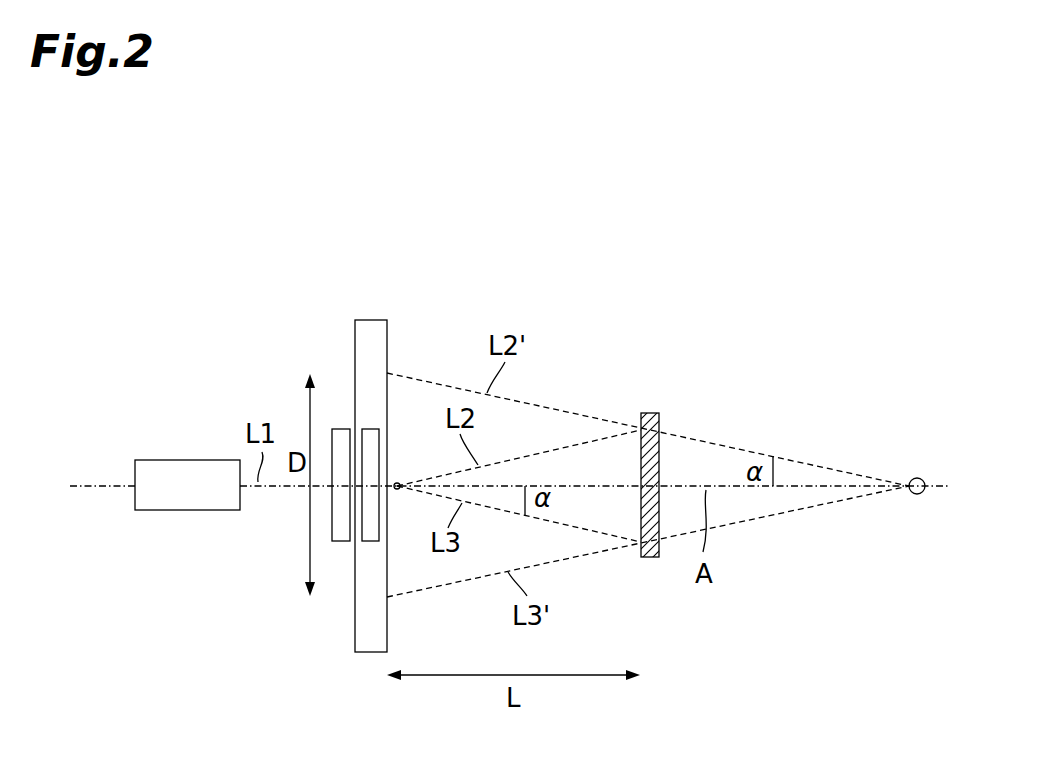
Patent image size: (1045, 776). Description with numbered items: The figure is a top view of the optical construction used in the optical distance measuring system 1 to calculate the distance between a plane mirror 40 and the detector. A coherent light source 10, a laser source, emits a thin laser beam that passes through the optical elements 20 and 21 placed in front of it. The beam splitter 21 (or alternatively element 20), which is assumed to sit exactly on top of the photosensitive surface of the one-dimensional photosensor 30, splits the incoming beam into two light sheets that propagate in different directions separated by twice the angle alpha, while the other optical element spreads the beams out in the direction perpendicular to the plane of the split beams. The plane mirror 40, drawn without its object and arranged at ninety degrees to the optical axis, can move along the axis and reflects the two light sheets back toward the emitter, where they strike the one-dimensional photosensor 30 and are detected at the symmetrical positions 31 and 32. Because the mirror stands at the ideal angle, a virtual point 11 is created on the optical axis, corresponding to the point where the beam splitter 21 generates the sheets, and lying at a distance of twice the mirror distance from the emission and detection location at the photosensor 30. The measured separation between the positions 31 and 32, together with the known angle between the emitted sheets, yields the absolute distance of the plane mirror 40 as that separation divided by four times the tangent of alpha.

The optical distance measuring system 1 is at (243, 677).
The coherent light source 10 is at (161, 459).
The virtual point 11 is at (917, 477).
The optical element 20 is at (341, 428).
The optical element (beam splitter) 21 is at (370, 542).
The one-dimensional photosensor 30 is at (371, 319).
The detection position 31 is at (387, 598).
The detection position 32 is at (387, 372).
The plane mirror 40 is at (647, 412).